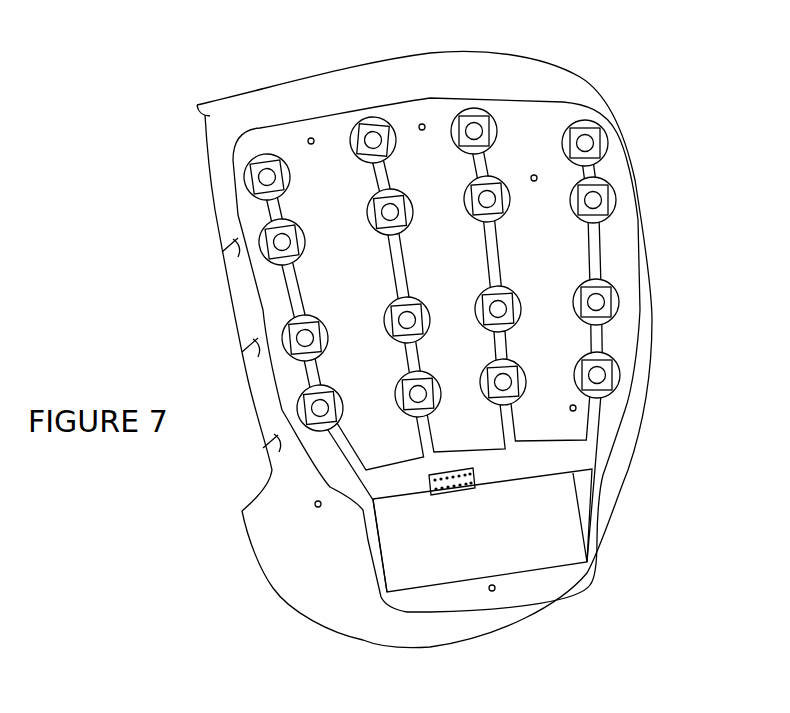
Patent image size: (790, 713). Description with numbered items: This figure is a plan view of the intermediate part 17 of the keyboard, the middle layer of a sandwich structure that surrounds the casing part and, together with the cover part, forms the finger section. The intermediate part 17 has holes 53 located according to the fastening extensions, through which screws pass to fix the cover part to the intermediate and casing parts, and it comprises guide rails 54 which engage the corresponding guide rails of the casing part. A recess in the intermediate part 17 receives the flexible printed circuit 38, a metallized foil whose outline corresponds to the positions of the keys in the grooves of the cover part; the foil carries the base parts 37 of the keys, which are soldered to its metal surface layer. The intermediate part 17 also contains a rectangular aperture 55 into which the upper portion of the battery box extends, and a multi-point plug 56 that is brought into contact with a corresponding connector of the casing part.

The intermediate part 17 is at (573, 72).
The holes 53 is at (420, 125).
The guide rails 54 is at (255, 346).
The base 37 is at (476, 212).
The flexible printed circuit 38 is at (593, 260).
The rectangular aperture 55 is at (565, 533).
The multi-point plug 56 is at (462, 488).